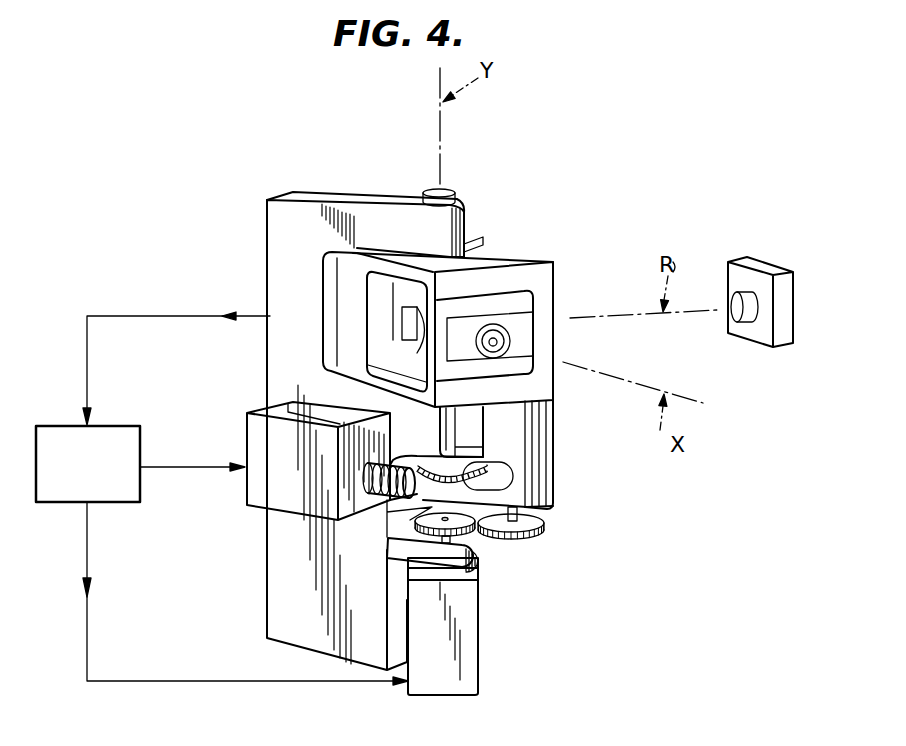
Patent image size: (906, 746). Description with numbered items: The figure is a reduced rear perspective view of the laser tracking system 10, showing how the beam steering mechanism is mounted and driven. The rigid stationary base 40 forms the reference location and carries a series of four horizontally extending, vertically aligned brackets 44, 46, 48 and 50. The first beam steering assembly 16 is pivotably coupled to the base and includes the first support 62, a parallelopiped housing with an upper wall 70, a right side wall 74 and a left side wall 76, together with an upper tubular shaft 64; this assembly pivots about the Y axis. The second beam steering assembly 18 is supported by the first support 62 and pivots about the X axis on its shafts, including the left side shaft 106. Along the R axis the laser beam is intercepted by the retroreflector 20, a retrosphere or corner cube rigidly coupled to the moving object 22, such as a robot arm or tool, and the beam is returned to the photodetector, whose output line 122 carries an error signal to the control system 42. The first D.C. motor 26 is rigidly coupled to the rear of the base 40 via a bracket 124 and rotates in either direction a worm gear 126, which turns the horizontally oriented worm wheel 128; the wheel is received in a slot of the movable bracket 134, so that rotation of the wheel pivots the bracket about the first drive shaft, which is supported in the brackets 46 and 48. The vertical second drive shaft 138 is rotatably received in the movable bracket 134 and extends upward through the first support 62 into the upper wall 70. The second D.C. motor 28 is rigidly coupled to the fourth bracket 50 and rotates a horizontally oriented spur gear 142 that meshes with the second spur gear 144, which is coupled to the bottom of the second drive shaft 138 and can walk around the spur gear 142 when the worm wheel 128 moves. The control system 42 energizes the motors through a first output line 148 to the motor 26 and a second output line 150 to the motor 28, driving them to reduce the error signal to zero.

The system 10 is at (574, 147).
The first beam steering assembly 16 is at (491, 229).
The second beam steering assembly 18 is at (378, 299).
The retroreflector 20 is at (732, 320).
The moving object 22 is at (749, 330).
The first D.C. motor 26 is at (311, 460).
The second D.C. motor 28 is at (481, 643).
The stationary base 40 is at (294, 176).
The control system 42 is at (44, 518).
The first bracket 44 is at (407, 220).
The second bracket 46 is at (441, 423).
The third bracket 48 is at (410, 500).
The fourth bracket 50 is at (481, 560).
The first support 62 is at (450, 316).
The upper tubular shaft 64 is at (466, 180).
The upper wall 70 is at (512, 254).
The right side wall 74 is at (373, 337).
The left side wall 76 is at (545, 383).
The left side shaft 106 is at (497, 345).
The output line 122 is at (165, 314).
The bracket 124 is at (324, 402).
The worm gear 126 is at (372, 480).
The worm wheel 128 is at (523, 487).
The movable bracket 134 is at (550, 447).
The second drive shaft 138 is at (521, 511).
The spur gear 142 is at (437, 563).
The second spur gear 144 is at (548, 528).
The first output line 148 is at (183, 470).
The second output line 150 is at (186, 679).